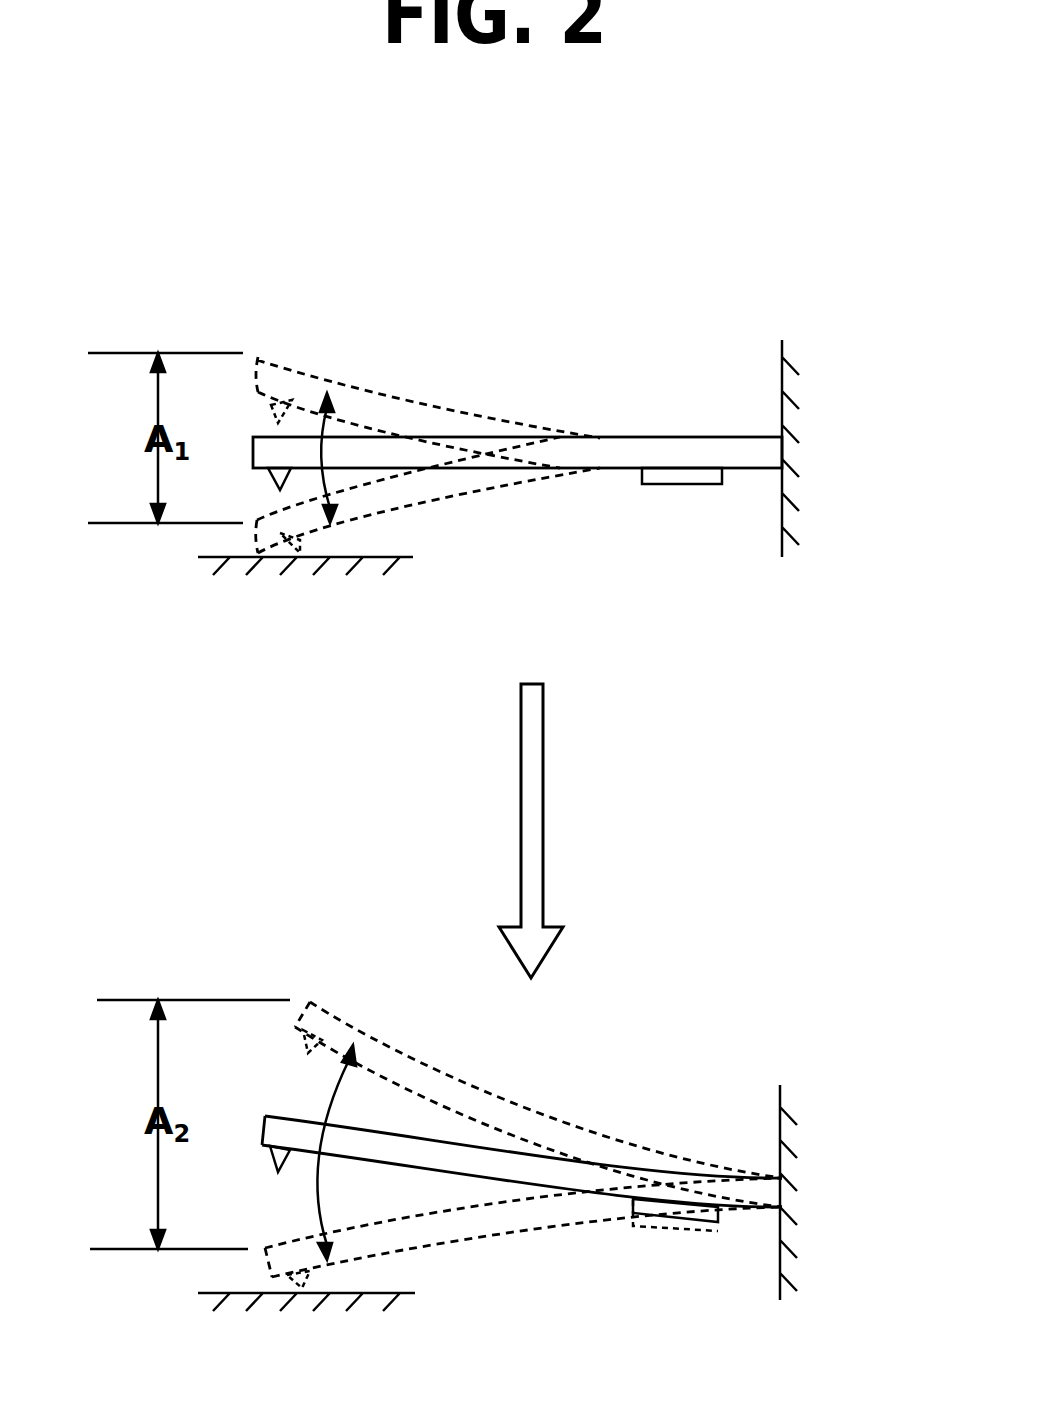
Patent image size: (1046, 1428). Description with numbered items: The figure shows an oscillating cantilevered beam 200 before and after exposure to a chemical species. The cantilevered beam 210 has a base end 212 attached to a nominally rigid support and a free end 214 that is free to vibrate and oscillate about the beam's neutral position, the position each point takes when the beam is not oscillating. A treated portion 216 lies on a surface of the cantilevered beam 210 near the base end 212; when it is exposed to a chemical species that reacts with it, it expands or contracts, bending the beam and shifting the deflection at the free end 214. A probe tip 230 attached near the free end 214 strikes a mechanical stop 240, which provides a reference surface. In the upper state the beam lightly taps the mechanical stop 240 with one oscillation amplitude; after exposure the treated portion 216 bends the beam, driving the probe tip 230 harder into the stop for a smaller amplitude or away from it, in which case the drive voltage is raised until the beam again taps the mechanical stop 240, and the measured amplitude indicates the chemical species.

The oscillating cantilevered beam 200 is at (178, 138).
The cantilevered beam 210 is at (585, 398).
The base end 212 is at (745, 437).
The free end 214 is at (270, 363).
The treated portion 216 is at (685, 484).
The probe tip 230 is at (300, 553).
The mechanical stop 240 is at (383, 557).